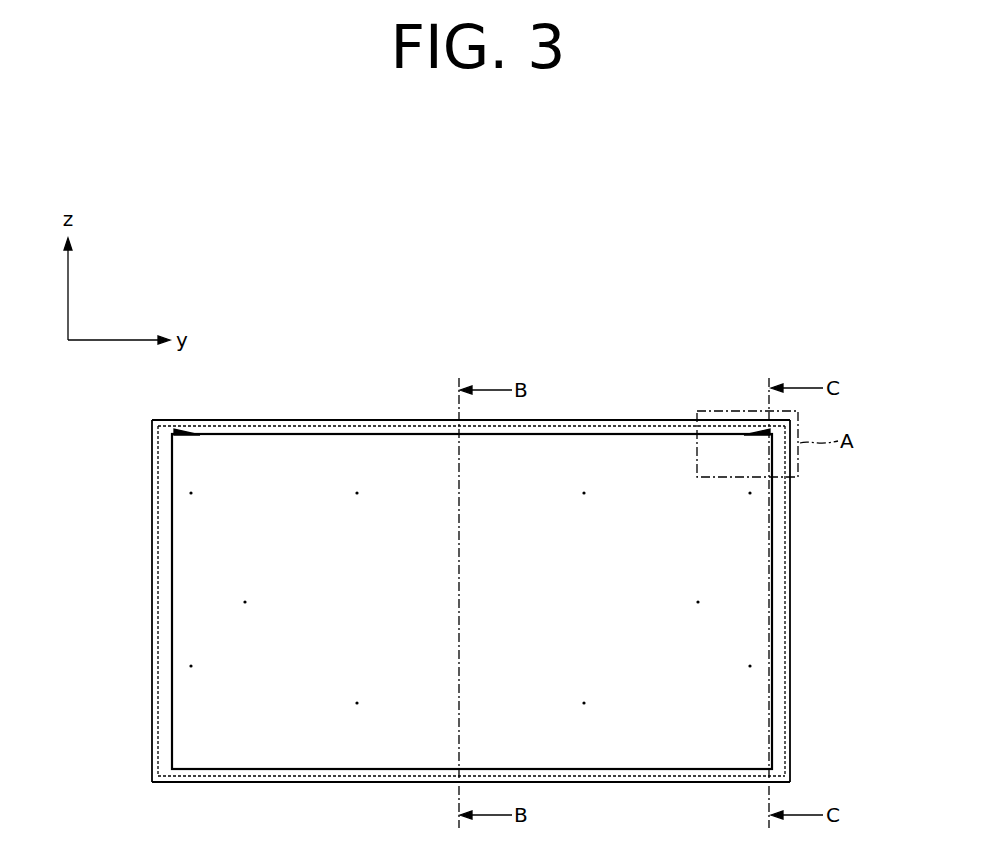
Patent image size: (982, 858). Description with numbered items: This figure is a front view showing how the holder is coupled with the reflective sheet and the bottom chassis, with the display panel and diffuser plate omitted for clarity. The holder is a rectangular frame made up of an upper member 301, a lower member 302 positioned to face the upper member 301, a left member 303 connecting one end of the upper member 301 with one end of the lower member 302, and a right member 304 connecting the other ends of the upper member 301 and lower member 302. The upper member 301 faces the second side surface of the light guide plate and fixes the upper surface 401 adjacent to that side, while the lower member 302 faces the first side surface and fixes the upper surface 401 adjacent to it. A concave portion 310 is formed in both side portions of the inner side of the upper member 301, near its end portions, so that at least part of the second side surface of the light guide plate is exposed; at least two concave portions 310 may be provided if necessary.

The upper member 301 is at (562, 428).
The lower member 302 is at (561, 776).
The left member 303 is at (162, 593).
The right member 304 is at (781, 593).
The concave portion 310 is at (176, 430).
The upper surface 401 is at (238, 738).